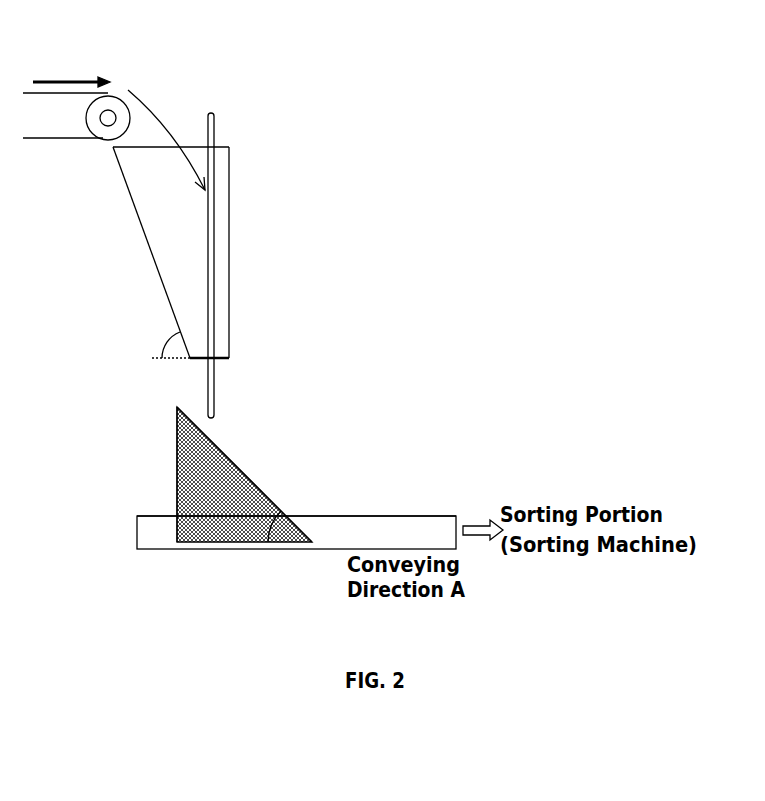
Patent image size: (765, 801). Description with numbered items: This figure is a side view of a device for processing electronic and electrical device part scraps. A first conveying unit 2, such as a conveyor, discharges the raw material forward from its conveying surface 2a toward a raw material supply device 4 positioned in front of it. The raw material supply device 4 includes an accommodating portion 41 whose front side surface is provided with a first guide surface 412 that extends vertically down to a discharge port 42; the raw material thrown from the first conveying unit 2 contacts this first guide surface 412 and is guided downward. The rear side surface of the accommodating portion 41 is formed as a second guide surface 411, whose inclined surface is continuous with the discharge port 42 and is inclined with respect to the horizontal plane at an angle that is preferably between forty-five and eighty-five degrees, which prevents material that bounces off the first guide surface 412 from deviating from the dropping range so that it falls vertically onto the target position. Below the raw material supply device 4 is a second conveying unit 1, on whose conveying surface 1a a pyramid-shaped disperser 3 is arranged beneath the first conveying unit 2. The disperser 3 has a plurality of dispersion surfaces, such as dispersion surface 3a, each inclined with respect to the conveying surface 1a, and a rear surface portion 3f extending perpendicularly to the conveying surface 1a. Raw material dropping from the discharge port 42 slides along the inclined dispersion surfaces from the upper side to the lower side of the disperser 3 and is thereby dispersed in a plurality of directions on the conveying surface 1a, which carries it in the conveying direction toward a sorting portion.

The second conveying unit 1 is at (314, 490).
The conveying surface of the second conveying unit 1a is at (355, 548).
The first conveying unit 2 is at (76, 74).
The conveying surface of the first conveying unit 2a is at (100, 83).
The pyramid-shaped disperser 3 is at (279, 461).
The dispersion surface 3a is at (250, 476).
The rear surface portion 3f is at (175, 452).
The raw material supply device 4 is at (196, 242).
The accommodating portion 41 is at (232, 277).
The second guide surface 411 is at (148, 240).
The first guide surface 412 is at (213, 213).
The discharge port 42 is at (195, 352).